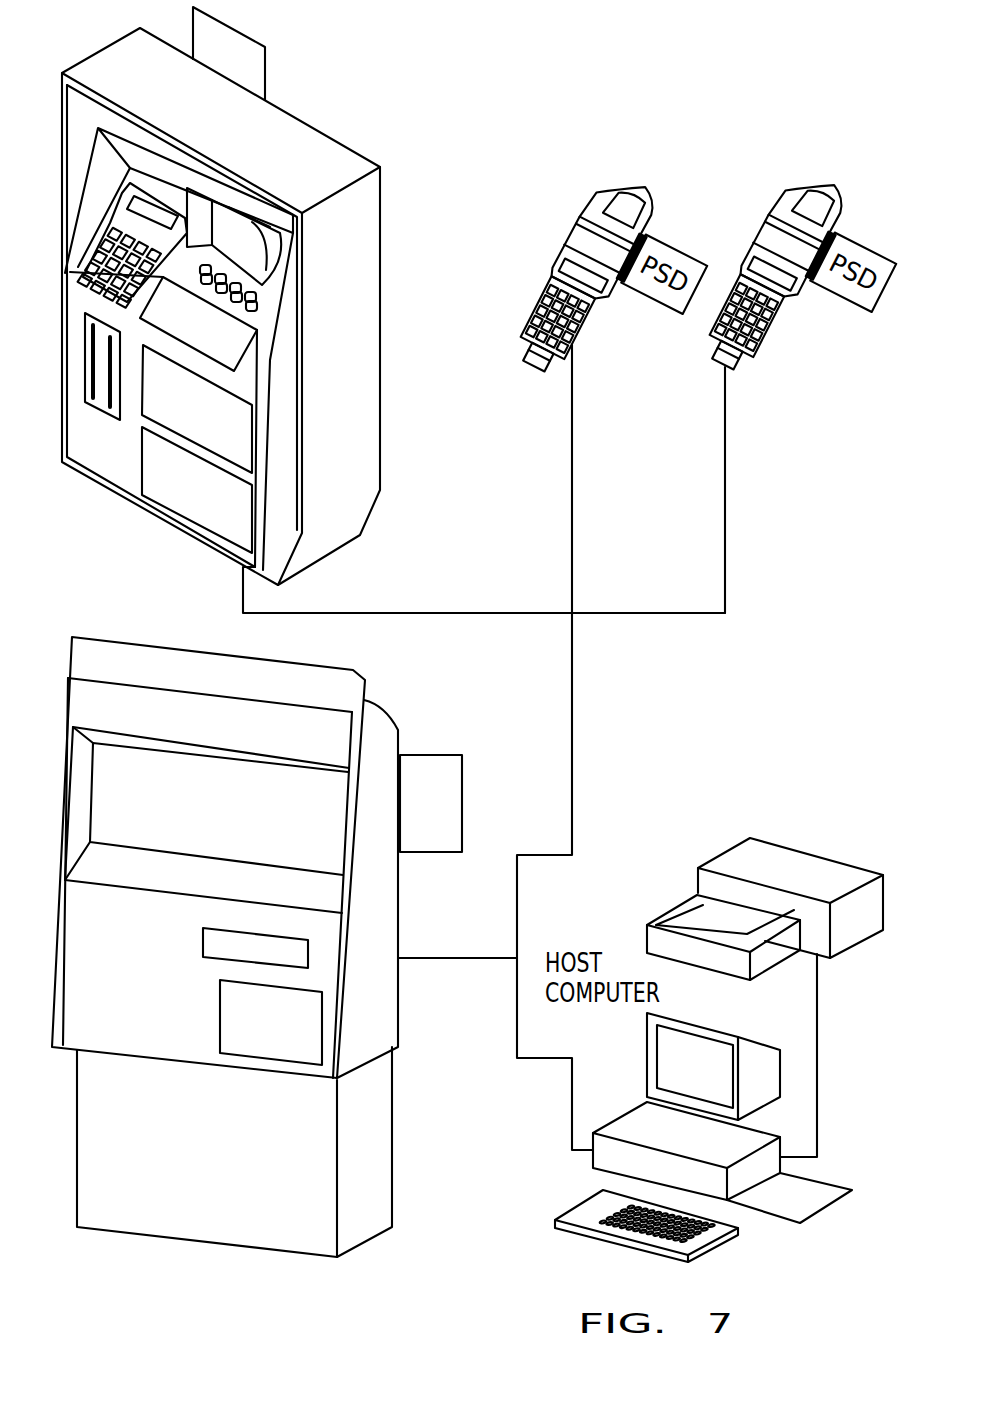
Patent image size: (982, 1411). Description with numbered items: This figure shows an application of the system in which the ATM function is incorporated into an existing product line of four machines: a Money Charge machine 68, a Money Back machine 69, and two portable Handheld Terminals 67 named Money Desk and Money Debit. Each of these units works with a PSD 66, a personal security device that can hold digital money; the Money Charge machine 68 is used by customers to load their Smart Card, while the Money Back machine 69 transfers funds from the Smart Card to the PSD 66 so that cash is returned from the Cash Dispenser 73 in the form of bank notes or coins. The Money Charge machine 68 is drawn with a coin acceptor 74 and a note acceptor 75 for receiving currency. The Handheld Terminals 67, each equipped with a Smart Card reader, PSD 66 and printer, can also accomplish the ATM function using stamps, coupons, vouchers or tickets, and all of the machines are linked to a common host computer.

The PSD 66 is at (230, 27).
The Handheld Terminal 67 is at (671, 268).
The Money Charge machine 68 is at (316, 130).
The Money Back machine 69 is at (392, 1178).
The Cash Dispenser 73 is at (302, 1042).
The coin acceptor 74 is at (235, 438).
The note acceptor 75 is at (225, 513).